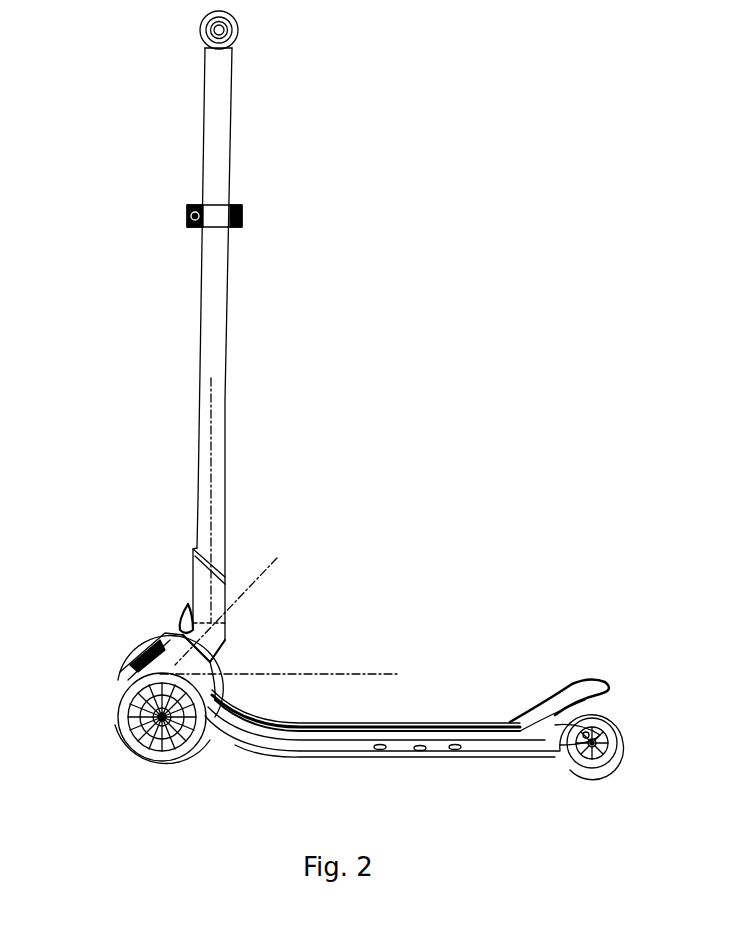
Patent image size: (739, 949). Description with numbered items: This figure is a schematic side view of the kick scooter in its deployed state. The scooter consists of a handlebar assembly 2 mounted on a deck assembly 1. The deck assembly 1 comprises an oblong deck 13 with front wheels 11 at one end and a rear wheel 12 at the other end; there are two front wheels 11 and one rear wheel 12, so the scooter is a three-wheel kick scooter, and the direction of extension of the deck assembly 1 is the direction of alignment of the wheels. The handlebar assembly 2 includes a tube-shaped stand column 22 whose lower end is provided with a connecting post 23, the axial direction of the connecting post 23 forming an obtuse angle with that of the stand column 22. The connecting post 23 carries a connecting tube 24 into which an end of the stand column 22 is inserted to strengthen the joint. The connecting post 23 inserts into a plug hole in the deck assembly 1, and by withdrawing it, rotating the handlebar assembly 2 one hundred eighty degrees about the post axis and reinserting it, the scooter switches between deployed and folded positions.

The deck assembly 1 is at (430, 684).
The handlebar assembly 2 is at (158, 313).
The front wheels 11 is at (167, 765).
The rear wheel 12 is at (578, 770).
The deck 13 is at (368, 757).
The stand column 22 is at (217, 417).
The connecting post 23 is at (208, 640).
The connecting tube 24 is at (198, 567).